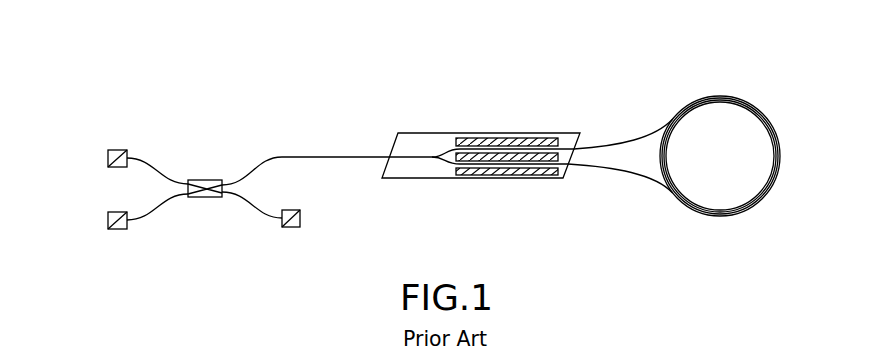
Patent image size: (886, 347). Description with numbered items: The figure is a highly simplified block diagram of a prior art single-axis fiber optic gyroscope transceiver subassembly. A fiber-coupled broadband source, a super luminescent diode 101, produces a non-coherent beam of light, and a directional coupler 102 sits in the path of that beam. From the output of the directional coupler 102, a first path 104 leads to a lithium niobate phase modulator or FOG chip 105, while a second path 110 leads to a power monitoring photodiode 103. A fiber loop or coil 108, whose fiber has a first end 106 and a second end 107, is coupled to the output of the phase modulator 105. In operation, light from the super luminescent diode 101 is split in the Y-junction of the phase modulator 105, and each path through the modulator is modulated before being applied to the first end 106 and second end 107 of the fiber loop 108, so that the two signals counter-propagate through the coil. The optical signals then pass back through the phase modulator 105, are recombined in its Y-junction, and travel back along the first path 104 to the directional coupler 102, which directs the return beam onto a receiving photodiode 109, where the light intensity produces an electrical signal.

The super luminescent diode 101 is at (107, 152).
The directional coupler 102 is at (205, 198).
The power monitoring photodiode 103 is at (300, 216).
The first path 104 is at (327, 157).
The phase modulator or FOG chip 105 is at (487, 133).
The first end 106 is at (636, 142).
The second end 107 is at (614, 168).
The fiber loop 108 is at (748, 104).
The receiving photodiode 109 is at (108, 218).
The second path 110 is at (249, 204).